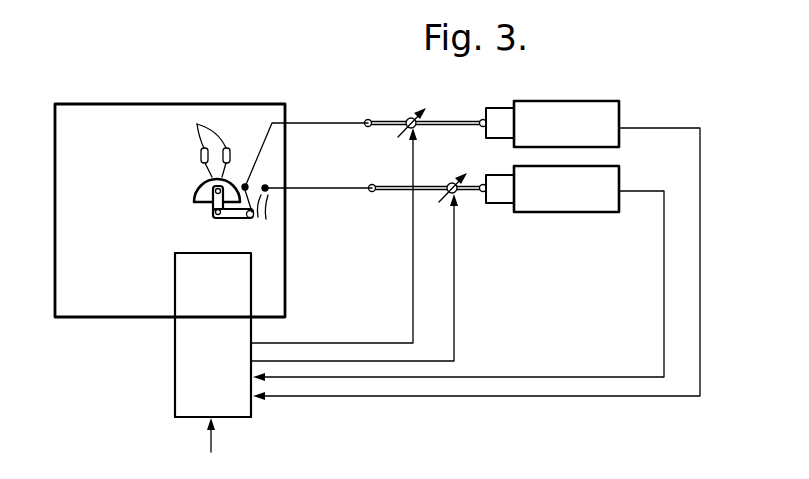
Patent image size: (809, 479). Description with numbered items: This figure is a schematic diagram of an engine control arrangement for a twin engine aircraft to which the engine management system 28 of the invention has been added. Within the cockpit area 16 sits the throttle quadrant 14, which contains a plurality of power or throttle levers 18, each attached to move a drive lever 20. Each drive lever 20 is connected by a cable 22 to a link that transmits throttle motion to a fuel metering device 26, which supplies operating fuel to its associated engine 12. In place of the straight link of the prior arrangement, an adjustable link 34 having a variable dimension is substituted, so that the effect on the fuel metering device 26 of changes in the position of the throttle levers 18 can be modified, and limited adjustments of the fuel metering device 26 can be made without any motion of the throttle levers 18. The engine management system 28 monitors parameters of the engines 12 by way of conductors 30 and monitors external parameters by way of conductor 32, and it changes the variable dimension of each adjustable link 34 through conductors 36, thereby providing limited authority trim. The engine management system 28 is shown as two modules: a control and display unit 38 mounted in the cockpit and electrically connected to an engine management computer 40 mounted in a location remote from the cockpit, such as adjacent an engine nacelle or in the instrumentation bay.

The engine 12 is at (619, 106).
The throttle quadrant 14 is at (200, 190).
The control station housing 16 is at (108, 171).
The throttle lever 18 is at (203, 139).
The drive lever 20 is at (254, 219).
The cable 22 is at (339, 126).
The fuel metering device 26 is at (498, 115).
The engine management system 28 is at (160, 362).
The conductor 30 is at (562, 396).
The conductor 32 is at (211, 441).
The adjustable link 34 is at (386, 121).
The conductors 36 is at (413, 285).
The control and display unit (CDU) 38 is at (178, 263).
The engine management computer (EMC) 40 is at (177, 412).